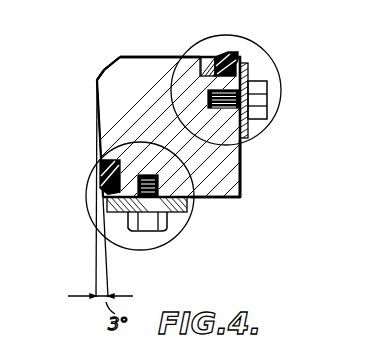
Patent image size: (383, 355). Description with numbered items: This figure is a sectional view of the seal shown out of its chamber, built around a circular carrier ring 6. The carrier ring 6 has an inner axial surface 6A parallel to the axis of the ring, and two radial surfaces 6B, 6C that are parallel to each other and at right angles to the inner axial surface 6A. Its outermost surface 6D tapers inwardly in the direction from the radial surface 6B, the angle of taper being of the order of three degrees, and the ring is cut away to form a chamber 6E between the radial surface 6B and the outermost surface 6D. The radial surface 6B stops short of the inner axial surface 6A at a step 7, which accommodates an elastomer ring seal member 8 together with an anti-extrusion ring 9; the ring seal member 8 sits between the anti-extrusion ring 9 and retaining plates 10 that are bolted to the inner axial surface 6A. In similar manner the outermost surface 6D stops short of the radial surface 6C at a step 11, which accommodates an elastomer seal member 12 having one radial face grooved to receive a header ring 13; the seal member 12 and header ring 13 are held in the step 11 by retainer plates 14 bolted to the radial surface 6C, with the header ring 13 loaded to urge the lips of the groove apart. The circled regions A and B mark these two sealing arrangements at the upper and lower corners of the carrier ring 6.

The carrier ring 6 is at (140, 126).
The inner axial surface 6A is at (241, 155).
The radial surface 6B is at (138, 57).
The radial surface 6C is at (217, 198).
The outermost surface 6D is at (97, 120).
The chamber 6E is at (106, 68).
The step 7 is at (201, 58).
The elastomer ring seal member 8 is at (226, 57).
The anti-extrusion ring 9 is at (208, 56).
The retaining plates 10 is at (248, 68).
The step 11 is at (100, 172).
The elastomer seal member 12 is at (108, 180).
The header ring 13 is at (108, 199).
The retainer plates 14 is at (168, 222).
The detail circle A is at (283, 99).
The detail circle B is at (177, 244).